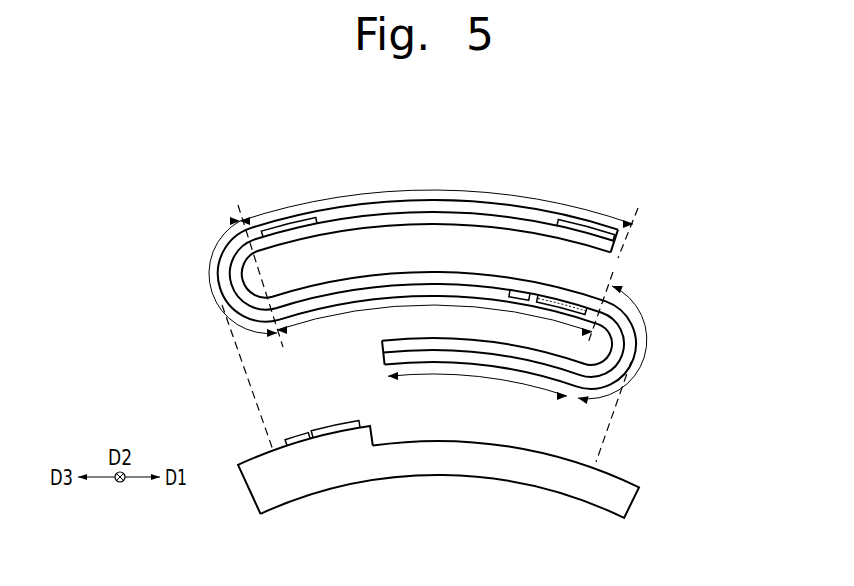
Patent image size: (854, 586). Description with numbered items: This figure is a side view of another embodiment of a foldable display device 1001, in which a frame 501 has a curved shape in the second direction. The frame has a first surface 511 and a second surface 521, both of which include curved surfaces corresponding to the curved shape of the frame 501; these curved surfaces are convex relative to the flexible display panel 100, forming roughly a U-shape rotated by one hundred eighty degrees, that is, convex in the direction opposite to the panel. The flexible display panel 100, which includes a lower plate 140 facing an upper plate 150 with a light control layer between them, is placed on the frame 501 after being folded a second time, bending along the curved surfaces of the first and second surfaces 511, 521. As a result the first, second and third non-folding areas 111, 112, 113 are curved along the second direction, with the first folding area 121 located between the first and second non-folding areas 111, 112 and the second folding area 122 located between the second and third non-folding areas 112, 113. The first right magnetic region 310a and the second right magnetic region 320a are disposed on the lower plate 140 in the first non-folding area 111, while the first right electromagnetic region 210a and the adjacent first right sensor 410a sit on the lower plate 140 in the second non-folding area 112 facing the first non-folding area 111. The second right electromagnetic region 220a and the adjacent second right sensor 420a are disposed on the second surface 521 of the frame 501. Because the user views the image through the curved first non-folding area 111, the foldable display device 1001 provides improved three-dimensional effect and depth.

The foldable display device 1001 is at (698, 137).
The flexible display panel 100 is at (681, 243).
The first non-folding area 111 is at (436, 195).
The second non-folding area 112 is at (434, 320).
The third non-folding area 113 is at (477, 389).
The first folding area 121 is at (224, 327).
The second folding area 122 is at (630, 335).
The lower plate 140 is at (210, 262).
The upper plate 150 is at (223, 270).
The first right electromagnetic region 210a is at (564, 296).
The second right electromagnetic region 220a is at (337, 427).
The first right magnetic region 310a is at (583, 228).
The second right magnetic region 320a is at (307, 220).
The first right sensor 410a is at (518, 290).
The second right sensor 420a is at (293, 440).
The frame 501 is at (617, 496).
The first surface 511 is at (460, 447).
The second surface 521 is at (255, 457).